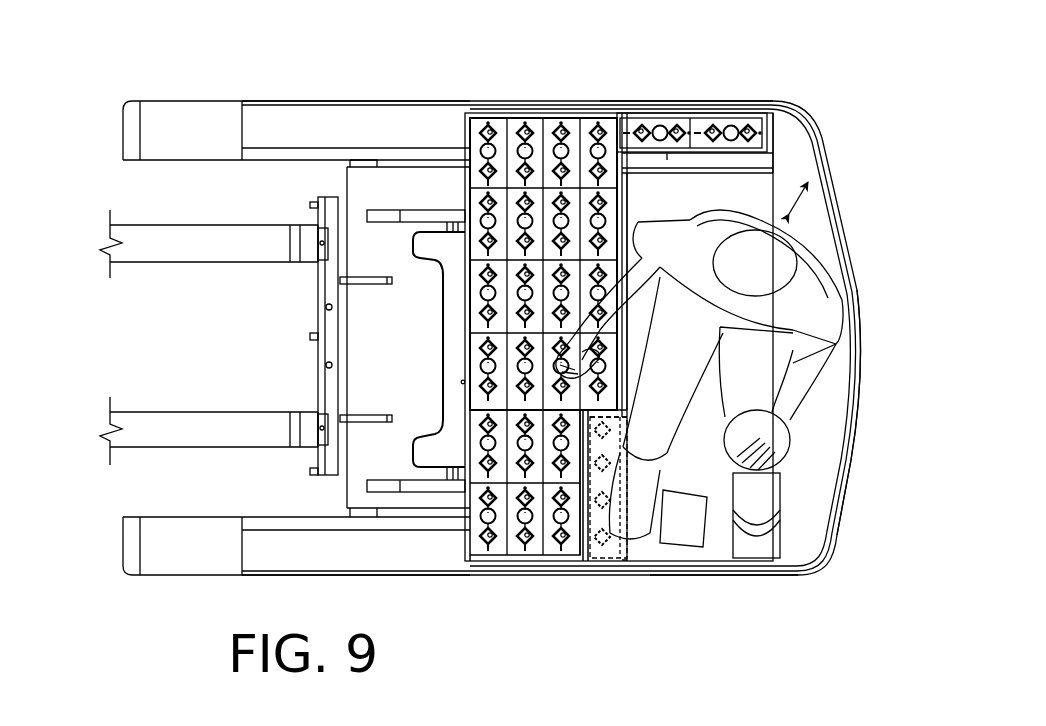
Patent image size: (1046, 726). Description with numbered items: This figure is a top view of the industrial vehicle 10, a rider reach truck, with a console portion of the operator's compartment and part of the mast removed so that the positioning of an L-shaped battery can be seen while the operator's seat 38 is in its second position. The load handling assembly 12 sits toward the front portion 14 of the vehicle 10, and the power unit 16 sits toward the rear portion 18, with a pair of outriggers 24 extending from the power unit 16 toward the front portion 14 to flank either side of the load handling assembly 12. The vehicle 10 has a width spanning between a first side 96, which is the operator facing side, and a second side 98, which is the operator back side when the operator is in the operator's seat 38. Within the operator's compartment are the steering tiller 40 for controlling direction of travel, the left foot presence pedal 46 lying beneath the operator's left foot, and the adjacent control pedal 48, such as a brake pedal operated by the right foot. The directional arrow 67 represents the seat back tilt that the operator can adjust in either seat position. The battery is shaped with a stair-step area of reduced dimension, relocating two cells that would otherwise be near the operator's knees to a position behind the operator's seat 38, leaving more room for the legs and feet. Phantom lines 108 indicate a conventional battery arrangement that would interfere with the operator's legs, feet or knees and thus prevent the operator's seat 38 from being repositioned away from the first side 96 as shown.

The industrial vehicle 10 is at (665, 56).
The load handling assembly 12 is at (172, 597).
The front portion 14 is at (127, 180).
The power unit 16 is at (513, 590).
The rear portion 18 is at (858, 494).
The outriggers 24 is at (337, 101).
The operator's seat 38 is at (864, 295).
The steering tiller 40 is at (830, 459).
The left foot presence pedal 46 is at (690, 543).
The control pedal 48 is at (647, 560).
The directional arrow 67 is at (810, 200).
The first side 96 is at (770, 575).
The second side 98 is at (764, 100).
The phantom lines 108 is at (625, 560).